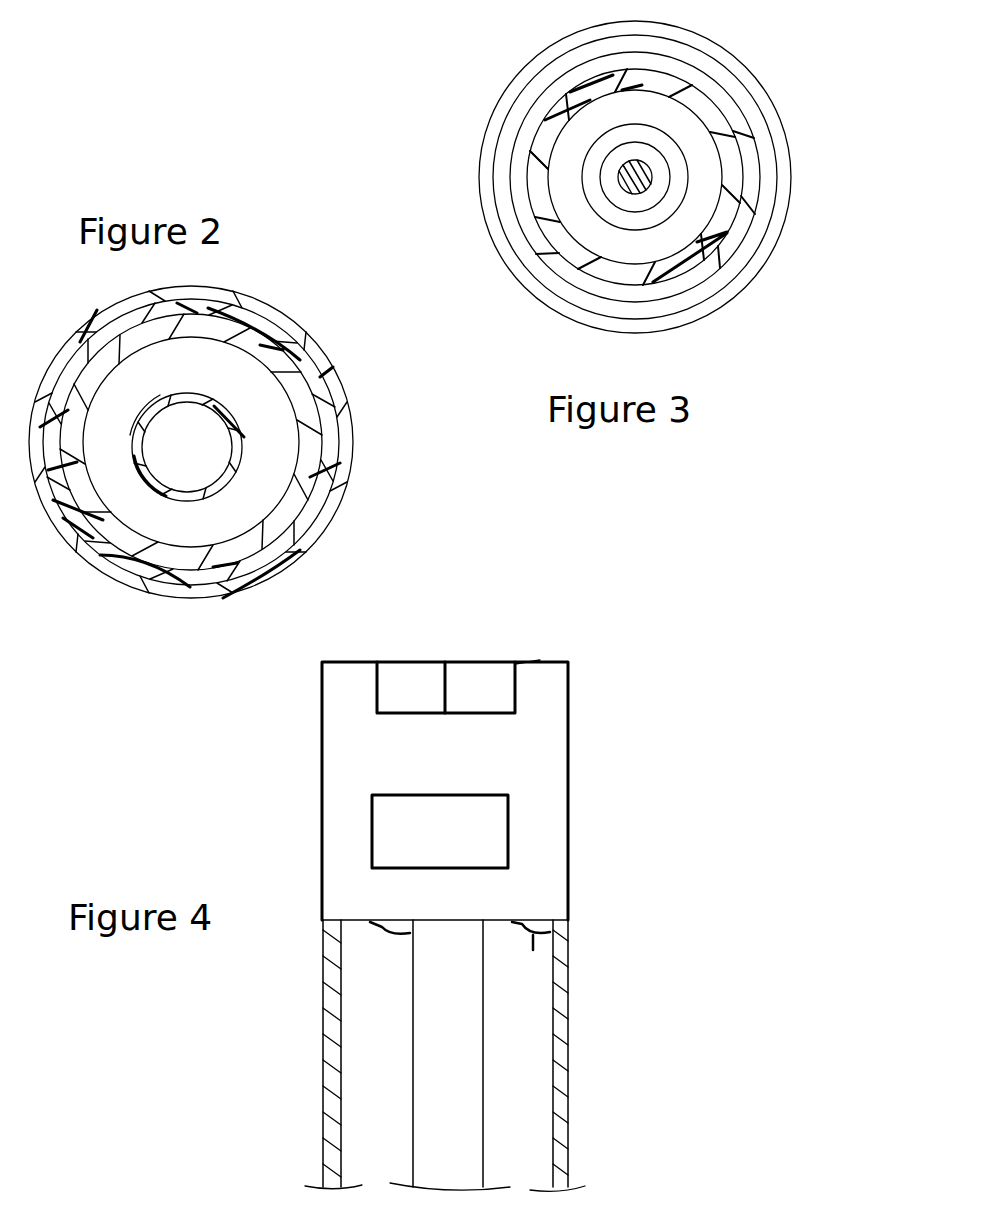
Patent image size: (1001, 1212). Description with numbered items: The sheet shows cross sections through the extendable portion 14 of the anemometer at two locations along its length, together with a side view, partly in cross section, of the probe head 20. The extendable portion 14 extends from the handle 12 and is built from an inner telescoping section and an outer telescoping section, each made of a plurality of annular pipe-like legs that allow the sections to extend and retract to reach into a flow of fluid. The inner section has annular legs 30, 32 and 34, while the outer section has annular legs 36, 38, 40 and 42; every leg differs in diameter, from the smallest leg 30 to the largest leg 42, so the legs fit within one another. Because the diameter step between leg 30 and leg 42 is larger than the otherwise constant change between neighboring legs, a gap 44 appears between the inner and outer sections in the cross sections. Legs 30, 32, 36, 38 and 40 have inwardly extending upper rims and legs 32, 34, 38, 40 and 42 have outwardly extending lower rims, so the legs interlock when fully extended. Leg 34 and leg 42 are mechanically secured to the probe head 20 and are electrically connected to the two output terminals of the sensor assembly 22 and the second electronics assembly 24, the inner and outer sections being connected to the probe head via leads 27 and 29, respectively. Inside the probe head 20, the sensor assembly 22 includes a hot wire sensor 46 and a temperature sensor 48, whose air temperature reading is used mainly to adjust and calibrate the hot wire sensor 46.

In FIG. 2, the handle 12 is at (186, 432).
In FIG. 2, the extendable portion 14 is at (272, 601).
In FIG. 3, the extendable portion 14 is at (529, 326).
In FIG. 4, the probe head 20 is at (568, 720).
In FIG. 4, the sensor assembly 22 is at (410, 716).
In FIG. 4, the second electronics assembly 24 is at (508, 828).
In FIG. 4, the lead 27 is at (383, 930).
In FIG. 4, the lead 29 is at (533, 950).
In FIG. 2, the annular leg 30 is at (228, 408).
In FIG. 3, the annular leg 30 is at (668, 215).
In FIG. 3, the annular leg 32 is at (645, 205).
In FIG. 3, the annular leg 34 is at (652, 166).
In FIG. 4, the annular leg 34 is at (475, 1100).
In FIG. 2, the annular leg 36 is at (78, 562).
In FIG. 3, the annular leg 36 is at (788, 173).
In FIG. 2, the annular leg 38 is at (182, 587).
In FIG. 3, the annular leg 38 is at (768, 210).
In FIG. 2, the annular leg 40 is at (148, 562).
In FIG. 3, the annular leg 40 is at (740, 227).
In FIG. 3, the annular leg 42 is at (703, 103).
In FIG. 4, the annular leg 42 is at (563, 987).
In FIG. 2, the gap 44 is at (247, 488).
In FIG. 3, the gap 44 is at (573, 153).
In FIG. 4, the hot wire sensor 46 is at (515, 685).
In FIG. 4, the temperature sensor 48 is at (392, 680).